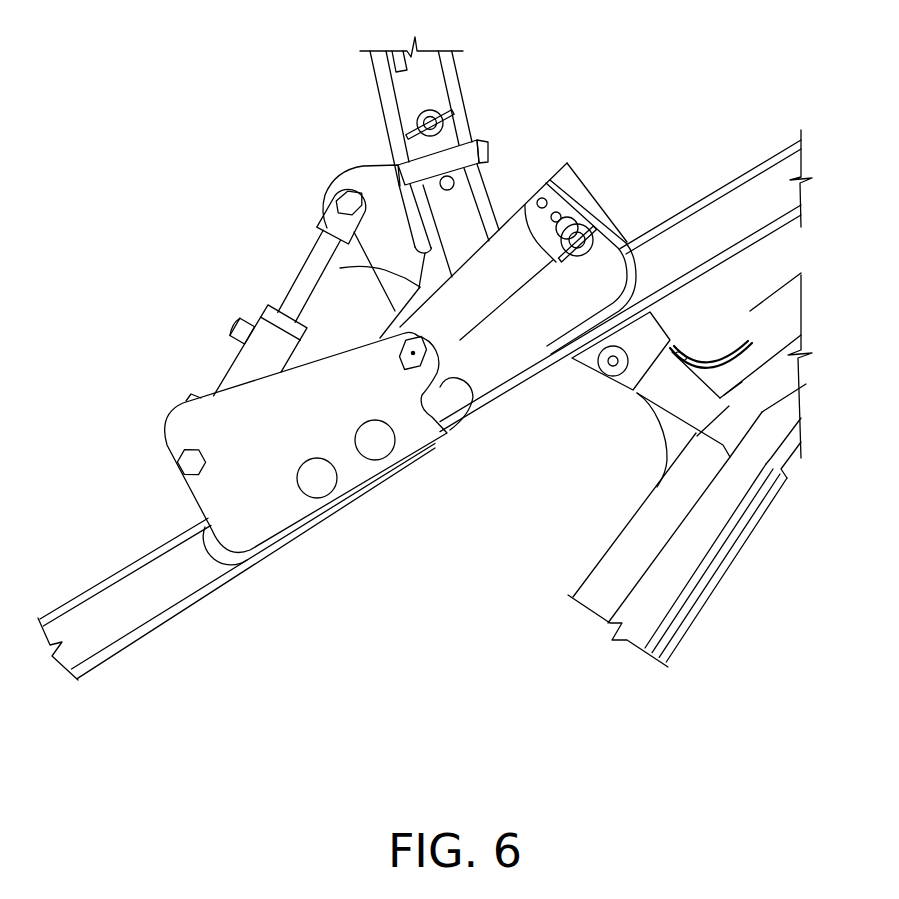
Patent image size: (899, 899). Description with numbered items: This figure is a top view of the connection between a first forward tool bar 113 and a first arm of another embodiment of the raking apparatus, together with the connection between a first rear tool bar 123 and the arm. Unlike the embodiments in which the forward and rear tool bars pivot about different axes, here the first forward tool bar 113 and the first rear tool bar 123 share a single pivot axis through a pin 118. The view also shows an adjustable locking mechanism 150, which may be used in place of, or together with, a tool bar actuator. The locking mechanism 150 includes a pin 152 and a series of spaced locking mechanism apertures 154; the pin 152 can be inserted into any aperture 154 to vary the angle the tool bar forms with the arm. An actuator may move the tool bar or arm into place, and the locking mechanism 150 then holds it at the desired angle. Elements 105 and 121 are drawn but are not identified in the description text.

The post 105 is at (480, 89).
The first forward tool bar 113 is at (93, 588).
The pin 118 is at (462, 365).
The linear actuator 121 is at (340, 268).
The first rear tool bar 123 is at (736, 177).
The adjustable locking mechanism 150 is at (593, 200).
The pin 152 is at (577, 258).
The locking mechanism apertures 154 is at (590, 203).